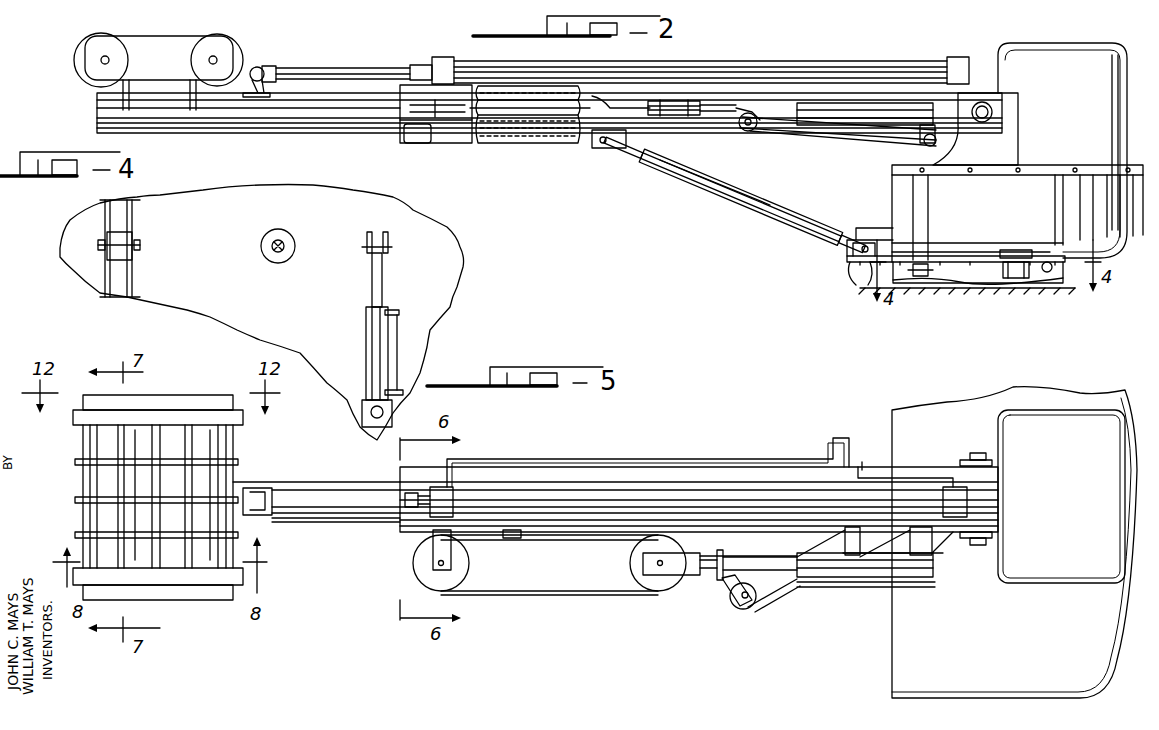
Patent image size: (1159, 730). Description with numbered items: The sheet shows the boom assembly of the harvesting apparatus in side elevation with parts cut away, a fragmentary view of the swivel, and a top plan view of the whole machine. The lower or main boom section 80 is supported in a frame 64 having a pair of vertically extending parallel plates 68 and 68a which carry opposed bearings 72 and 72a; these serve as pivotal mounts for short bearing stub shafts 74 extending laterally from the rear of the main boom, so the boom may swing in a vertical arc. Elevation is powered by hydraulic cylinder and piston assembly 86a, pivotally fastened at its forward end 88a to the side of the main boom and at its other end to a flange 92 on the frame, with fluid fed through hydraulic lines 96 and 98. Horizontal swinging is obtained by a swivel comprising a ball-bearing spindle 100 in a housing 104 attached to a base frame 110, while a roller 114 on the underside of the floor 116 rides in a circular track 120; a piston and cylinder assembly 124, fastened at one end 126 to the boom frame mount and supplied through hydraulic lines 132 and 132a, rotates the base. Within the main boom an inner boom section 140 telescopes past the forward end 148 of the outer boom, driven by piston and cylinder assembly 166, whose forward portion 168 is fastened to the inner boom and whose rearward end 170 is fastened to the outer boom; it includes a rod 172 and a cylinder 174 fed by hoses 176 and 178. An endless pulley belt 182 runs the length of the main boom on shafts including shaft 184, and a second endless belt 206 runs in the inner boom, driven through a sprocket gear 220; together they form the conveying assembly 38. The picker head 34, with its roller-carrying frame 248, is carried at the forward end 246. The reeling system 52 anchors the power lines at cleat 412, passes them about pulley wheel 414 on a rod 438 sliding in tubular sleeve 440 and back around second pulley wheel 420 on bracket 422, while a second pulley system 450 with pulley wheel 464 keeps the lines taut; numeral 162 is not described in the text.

In FIG. 2, the picker head 34 is at (66, 60).
In FIG. 5, the picker head 34 is at (261, 620).
In FIG. 2, the conveying assembly 38 is at (339, 36).
In FIG. 5, the reeling system 52 is at (550, 603).
In FIG. 2, the frame 64 is at (1022, 153).
In FIG. 5, the vertically extending plate 68 is at (963, 458).
In FIG. 2, the vertically extending plate 68a is at (1003, 133).
In FIG. 5, the vertically extending plate 68a is at (963, 540).
In FIG. 5, the bearing 72 is at (978, 452).
In FIG. 2, the bearing 72a is at (993, 106).
In FIG. 5, the bearing 72a is at (980, 547).
In FIG. 2, the bearing stub shaft 74 is at (982, 106).
In FIG. 2, the main boom section 80 is at (795, 47).
In FIG. 2, the hydraulic cylinder and piston assembly 86a is at (738, 209).
In FIG. 2, the forward end 88a is at (600, 150).
In FIG. 2, the flange 92 is at (860, 264).
In FIG. 2, the hydraulic line 96 is at (738, 183).
In FIG. 2, the hydraulic line 98 is at (868, 228).
In FIG. 2, the ball-bearing spindle 100 is at (1013, 265).
In FIG. 4, the ball-bearing spindle 100 is at (295, 242).
In FIG. 2, the housing 104 is at (1007, 250).
In FIG. 4, the housing 104 is at (279, 232).
In FIG. 2, the base frame 110 is at (969, 285).
In FIG. 2, the roller 114 is at (918, 275).
In FIG. 4, the roller 114 is at (118, 252).
In FIG. 2, the floor 116 is at (943, 282).
In FIG. 4, the floor 116 is at (212, 215).
In FIG. 4, the track 120 is at (141, 212).
In FIG. 4, the piston and cylinder assembly 124 is at (398, 348).
In FIG. 4, the end 126 is at (389, 242).
In FIG. 4, the hydraulic line 132 is at (399, 315).
In FIG. 4, the hydraulic line 132a is at (414, 392).
In FIG. 2, the inner boom section 140 is at (343, 140).
In FIG. 5, the inner boom section 140 is at (325, 536).
In FIG. 2, the forward end 148 is at (416, 136).
In FIG. 2, the arm 162 is at (1045, 28).
In FIG. 2, the piston and cylinder assembly 166 is at (713, 53).
In FIG. 2, the forward portion 168 is at (254, 67).
In FIG. 5, the forward portion 168 is at (263, 497).
In FIG. 2, the rearward end 170 is at (953, 66).
In FIG. 5, the rearward end 170 is at (957, 503).
In FIG. 2, the rod 172 is at (298, 68).
In FIG. 5, the rod 172 is at (323, 500).
In FIG. 2, the cylinder 174 is at (802, 72).
In FIG. 5, the cylinder 174 is at (632, 505).
In FIG. 5, the hose 176 is at (523, 457).
In FIG. 5, the hose 178 is at (872, 458).
In FIG. 2, the endless pulley belt 182 is at (543, 145).
In FIG. 2, the rotatable shaft 184 is at (485, 5).
In FIG. 2, the second endless belt 206 is at (512, 110).
In FIG. 2, the second sprocket gear 220 is at (135, 5).
In FIG. 2, the forward end 246 is at (105, 108).
In FIG. 5, the roller-carrying frame 248 is at (175, 402).
In FIG. 5, the cleat 412 is at (509, 540).
In FIG. 2, the pulley wheel 414 is at (683, 107).
In FIG. 5, the pulley wheel 414 is at (657, 583).
In FIG. 2, the second pulley wheel 420 is at (400, 100).
In FIG. 5, the second pulley wheel 420 is at (426, 568).
In FIG. 5, the bracket 422 is at (428, 550).
In FIG. 2, the rod 438 is at (745, 110).
In FIG. 5, the rod 438 is at (773, 565).
In FIG. 2, the tubular sleeve 440 is at (868, 112).
In FIG. 5, the tubular sleeve 440 is at (877, 565).
In FIG. 2, the second pulley system 450 is at (825, 150).
In FIG. 5, the second pulley system 450 is at (810, 596).
In FIG. 5, the second pulley wheel 464 is at (740, 602).